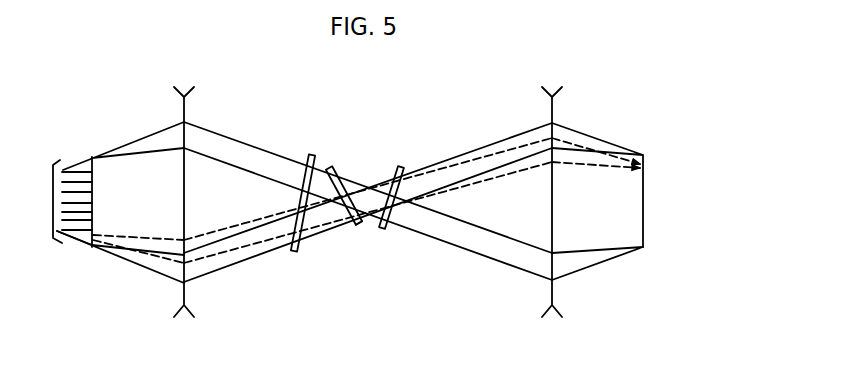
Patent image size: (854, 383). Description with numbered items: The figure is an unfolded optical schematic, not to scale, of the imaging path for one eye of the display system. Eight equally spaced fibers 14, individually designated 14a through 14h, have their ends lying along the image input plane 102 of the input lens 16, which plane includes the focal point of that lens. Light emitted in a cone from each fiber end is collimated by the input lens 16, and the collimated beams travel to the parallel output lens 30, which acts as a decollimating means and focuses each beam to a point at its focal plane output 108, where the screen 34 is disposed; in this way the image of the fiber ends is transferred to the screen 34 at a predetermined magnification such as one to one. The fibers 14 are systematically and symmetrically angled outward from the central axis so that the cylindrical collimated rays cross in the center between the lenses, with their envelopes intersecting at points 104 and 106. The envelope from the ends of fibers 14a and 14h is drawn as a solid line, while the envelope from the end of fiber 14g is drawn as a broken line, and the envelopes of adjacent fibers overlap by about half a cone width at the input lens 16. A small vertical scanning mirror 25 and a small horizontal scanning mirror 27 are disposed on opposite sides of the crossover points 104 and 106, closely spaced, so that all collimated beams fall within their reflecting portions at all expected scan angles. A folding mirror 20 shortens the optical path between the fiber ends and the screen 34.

The fibers 14 is at (50, 203).
The fiber 14a is at (73, 162).
The fiber 14g is at (60, 224).
The fiber 14h is at (72, 243).
The image input plane 102 is at (93, 252).
The input lens 16 is at (190, 110).
The folding mirror 20 is at (305, 154).
The vertical scanning mirror 25 is at (330, 158).
The intersection point 104 is at (368, 183).
The intersection point 106 is at (371, 227).
The horizontal scanning mirror 27 is at (386, 233).
The output lens 30 is at (557, 106).
The screen 34 is at (646, 154).
The focal plane output 108 is at (645, 251).